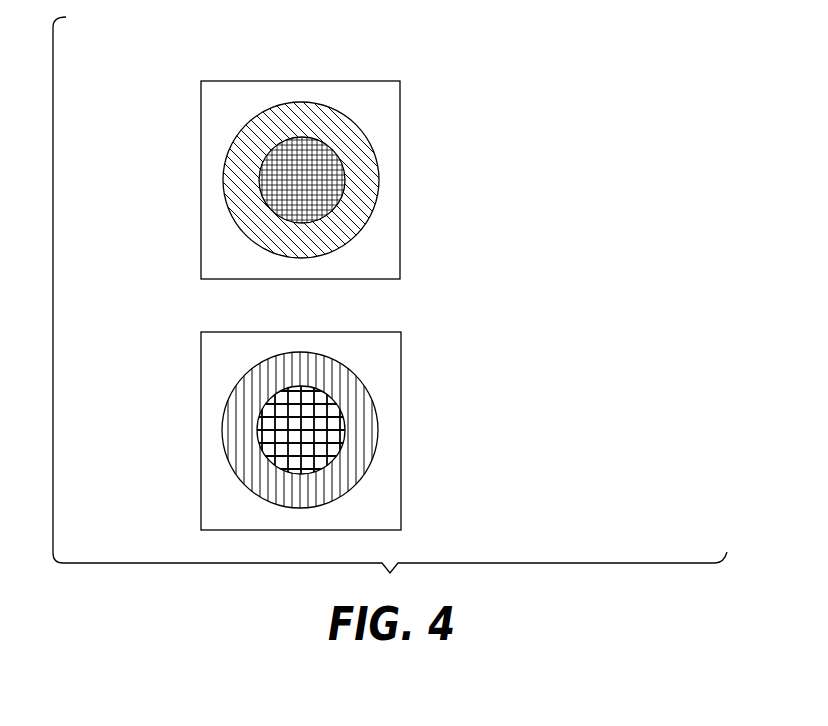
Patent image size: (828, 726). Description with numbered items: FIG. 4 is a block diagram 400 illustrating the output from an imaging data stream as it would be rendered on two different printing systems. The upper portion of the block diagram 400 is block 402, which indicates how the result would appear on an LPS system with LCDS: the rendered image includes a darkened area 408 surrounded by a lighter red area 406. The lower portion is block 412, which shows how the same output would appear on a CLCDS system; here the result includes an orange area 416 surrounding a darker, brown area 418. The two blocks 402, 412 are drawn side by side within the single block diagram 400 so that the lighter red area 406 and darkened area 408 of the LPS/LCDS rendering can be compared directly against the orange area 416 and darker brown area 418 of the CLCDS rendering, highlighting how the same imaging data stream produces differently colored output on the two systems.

The block diagram 400 is at (510, 57).
The block 402 is at (268, 81).
The lighter red area 406 is at (352, 143).
The darkened area 408 is at (315, 185).
The block 412 is at (268, 332).
The orange area 416 is at (352, 393).
The darker, brown area 418 is at (316, 432).